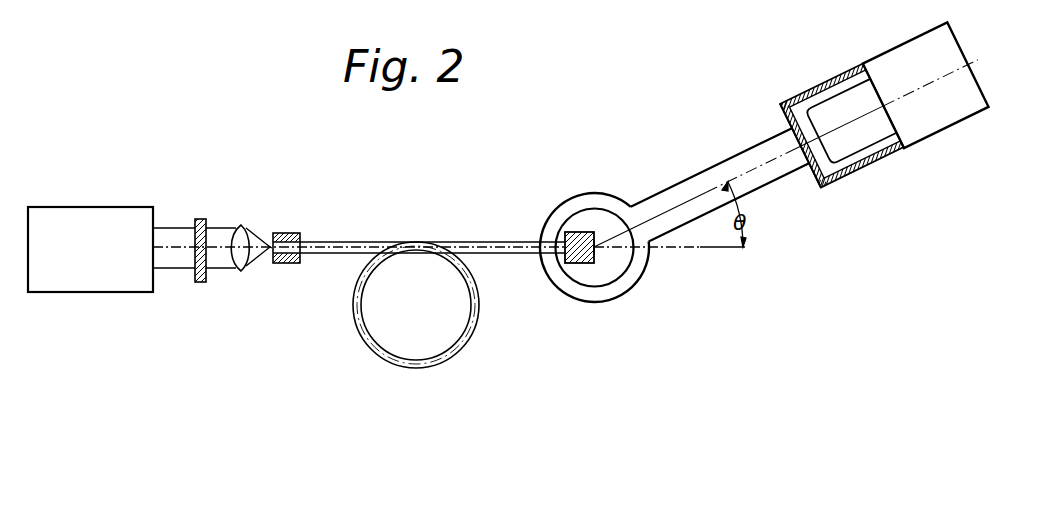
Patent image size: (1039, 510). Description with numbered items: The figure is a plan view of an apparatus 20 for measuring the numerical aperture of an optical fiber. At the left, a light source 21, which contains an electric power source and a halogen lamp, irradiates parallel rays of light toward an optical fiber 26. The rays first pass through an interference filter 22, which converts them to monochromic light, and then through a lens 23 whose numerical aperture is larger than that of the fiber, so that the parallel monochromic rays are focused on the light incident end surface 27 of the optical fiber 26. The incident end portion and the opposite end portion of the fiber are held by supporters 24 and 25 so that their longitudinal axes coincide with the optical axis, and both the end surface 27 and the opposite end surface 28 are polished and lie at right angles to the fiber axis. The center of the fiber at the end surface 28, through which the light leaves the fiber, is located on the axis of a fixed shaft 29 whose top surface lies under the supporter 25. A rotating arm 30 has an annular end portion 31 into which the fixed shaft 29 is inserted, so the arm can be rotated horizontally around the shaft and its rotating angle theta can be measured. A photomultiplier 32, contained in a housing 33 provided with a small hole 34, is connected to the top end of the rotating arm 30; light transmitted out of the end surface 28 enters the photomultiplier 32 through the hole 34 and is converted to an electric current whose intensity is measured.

The apparatus 20 is at (430, 190).
The light source 21 is at (96, 207).
The interference filter 22 is at (200, 219).
The lens 23 is at (241, 225).
The supporter 24 is at (296, 264).
The supporter 25 is at (580, 232).
The optical fiber 26 is at (368, 242).
The light incident end surface 27 is at (270, 250).
The end surface 28 is at (598, 254).
The fixed shaft 29 is at (623, 257).
The rotating arm 30 is at (722, 167).
The annular end portion 31 is at (600, 207).
The photomultiplier 32 is at (870, 132).
The housing 33 is at (847, 171).
The hole 34 is at (798, 160).